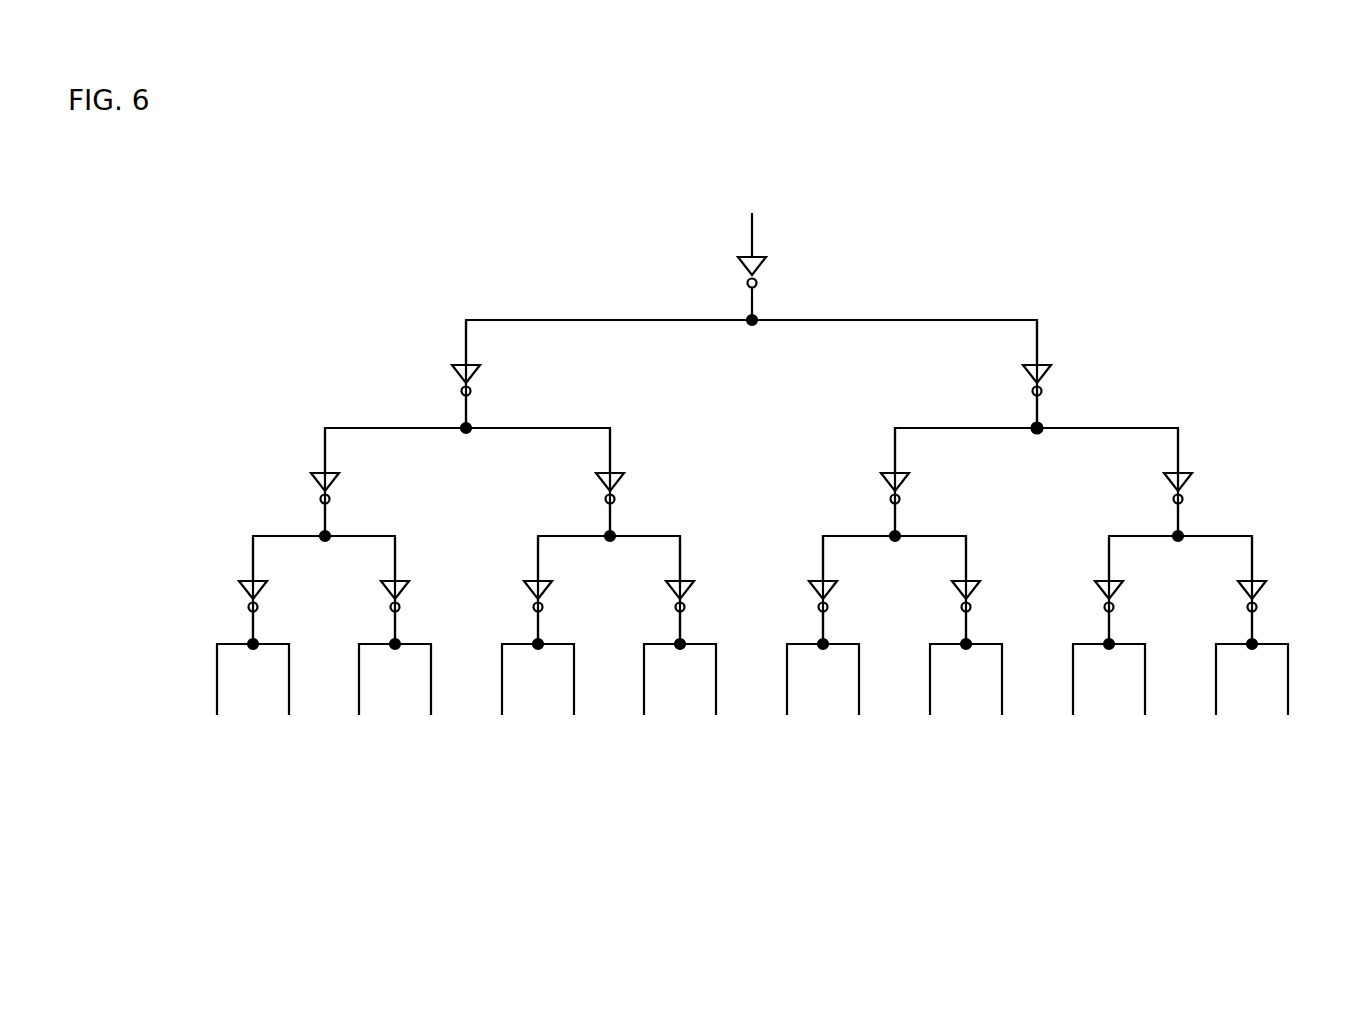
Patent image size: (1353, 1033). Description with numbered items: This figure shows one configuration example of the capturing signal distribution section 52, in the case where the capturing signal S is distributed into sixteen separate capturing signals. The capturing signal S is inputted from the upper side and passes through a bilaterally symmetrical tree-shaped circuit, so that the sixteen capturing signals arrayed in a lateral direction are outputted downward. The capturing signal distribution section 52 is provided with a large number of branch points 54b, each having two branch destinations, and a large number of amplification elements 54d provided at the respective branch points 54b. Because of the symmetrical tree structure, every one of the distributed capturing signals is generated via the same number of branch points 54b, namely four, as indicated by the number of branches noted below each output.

The capturing signal distribution section 52 is at (1324, 122).
The amplification element 54d is at (1045, 358).
The branch point 54b is at (1043, 423).